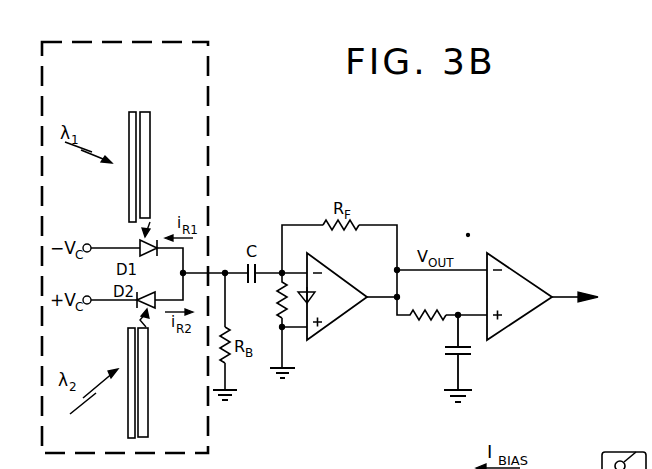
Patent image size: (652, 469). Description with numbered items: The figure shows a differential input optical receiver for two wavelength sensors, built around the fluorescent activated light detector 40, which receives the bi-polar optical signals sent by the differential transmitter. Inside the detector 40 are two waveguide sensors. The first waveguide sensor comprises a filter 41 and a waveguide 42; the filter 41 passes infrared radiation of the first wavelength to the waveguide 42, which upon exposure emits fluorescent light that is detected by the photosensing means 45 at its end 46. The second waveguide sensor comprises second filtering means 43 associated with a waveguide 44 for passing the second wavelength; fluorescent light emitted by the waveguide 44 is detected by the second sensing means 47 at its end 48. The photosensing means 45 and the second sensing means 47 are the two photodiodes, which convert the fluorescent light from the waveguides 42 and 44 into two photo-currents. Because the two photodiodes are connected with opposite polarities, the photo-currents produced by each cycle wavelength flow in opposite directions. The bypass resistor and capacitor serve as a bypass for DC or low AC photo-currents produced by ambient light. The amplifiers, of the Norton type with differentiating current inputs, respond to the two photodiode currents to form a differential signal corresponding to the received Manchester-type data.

The fluorescent activated light detector 40 is at (195, 43).
The filter 41 is at (128, 124).
The waveguide 42 is at (151, 120).
The second filtering means 43 is at (127, 422).
The waveguide 44 is at (149, 419).
The photosensing means 45 is at (142, 250).
The end 46 is at (150, 222).
The second sensing means 47 is at (150, 296).
The end 48 is at (148, 325).